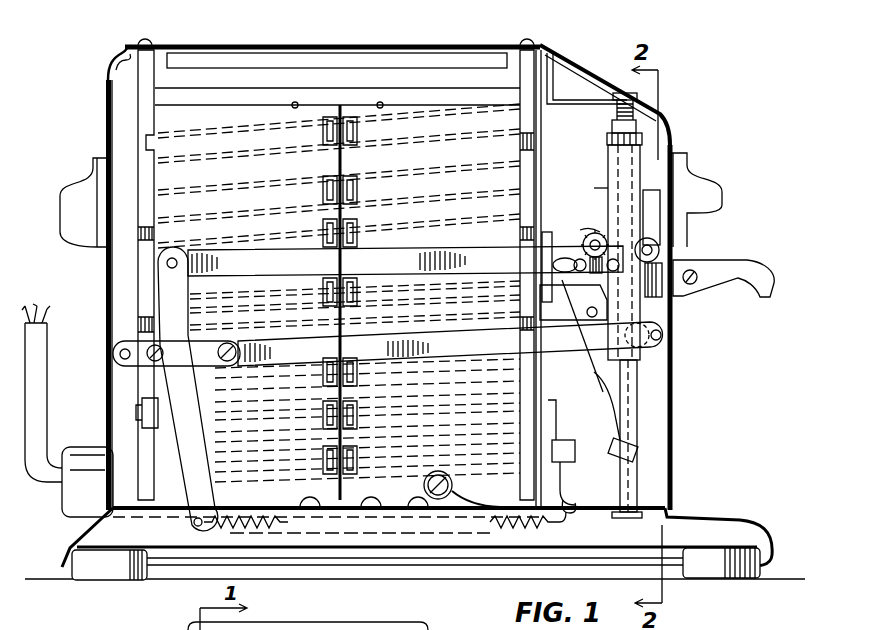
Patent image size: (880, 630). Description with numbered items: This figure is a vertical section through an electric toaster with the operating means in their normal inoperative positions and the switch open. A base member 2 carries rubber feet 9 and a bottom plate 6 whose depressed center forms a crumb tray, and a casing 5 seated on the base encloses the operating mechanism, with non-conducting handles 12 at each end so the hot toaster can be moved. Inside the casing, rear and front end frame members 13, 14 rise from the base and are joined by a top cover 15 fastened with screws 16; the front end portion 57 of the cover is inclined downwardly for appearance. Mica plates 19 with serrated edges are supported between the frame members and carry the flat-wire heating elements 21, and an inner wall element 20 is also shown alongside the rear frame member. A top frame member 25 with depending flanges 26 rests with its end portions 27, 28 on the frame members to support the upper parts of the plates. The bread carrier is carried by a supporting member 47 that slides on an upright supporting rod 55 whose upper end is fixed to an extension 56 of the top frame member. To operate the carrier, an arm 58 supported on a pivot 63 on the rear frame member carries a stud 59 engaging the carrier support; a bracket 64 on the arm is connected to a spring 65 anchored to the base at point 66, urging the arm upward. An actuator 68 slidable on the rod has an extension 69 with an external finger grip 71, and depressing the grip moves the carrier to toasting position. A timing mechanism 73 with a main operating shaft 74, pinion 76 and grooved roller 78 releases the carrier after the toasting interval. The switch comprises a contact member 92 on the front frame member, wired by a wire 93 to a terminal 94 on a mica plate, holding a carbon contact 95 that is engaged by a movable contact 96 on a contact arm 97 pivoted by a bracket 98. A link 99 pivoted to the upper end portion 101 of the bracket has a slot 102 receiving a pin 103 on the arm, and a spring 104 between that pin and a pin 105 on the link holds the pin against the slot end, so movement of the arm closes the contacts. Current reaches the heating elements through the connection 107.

The base member 2 is at (752, 546).
The casing 5 is at (108, 284).
The bottom plate or cover 6 is at (585, 548).
The feet 9 is at (120, 576).
The handles 12 is at (80, 196).
The end frame member 13 is at (138, 146).
The end frame member 14 is at (546, 232).
The top cover 15 is at (306, 44).
The screws 16 is at (148, 44).
The mica plates 19 is at (205, 97).
The inner wall 20 is at (148, 178).
The heating elements 21 is at (390, 184).
The member 25 is at (489, 46).
The depending flanges 26 is at (380, 72).
The end portion 27 is at (124, 68).
The end portion 28 is at (556, 50).
The supporting member 47 is at (636, 194).
The upright supporting rod 55 is at (634, 480).
The extension 56 is at (603, 103).
The front end portion 57 is at (614, 82).
The arm 58 is at (490, 341).
The stud 59 is at (668, 339).
The pivot 63 is at (126, 353).
The bracket 64 is at (172, 396).
The spring 65 is at (238, 528).
The spring attachment point 66 is at (577, 508).
The actuator 68 is at (612, 128).
The extension 69 is at (662, 282).
The finger grip 71 is at (740, 262).
The motor or timing mechanism 73 is at (605, 180).
The main operating shaft 74 is at (596, 233).
The pinion 76 is at (584, 236).
The grooved roller 78 is at (664, 254).
The contact member 92 is at (568, 464).
The wire 93 is at (490, 509).
The terminal 94 is at (452, 490).
The carbon contact 95 is at (572, 440).
The movable contact 96 is at (611, 448).
The contact arm 97 is at (620, 399).
The bracket 98 is at (568, 322).
The link 99 is at (406, 258).
The upper end portion 101 is at (189, 293).
The slot 102 is at (566, 258).
The stud or pin 103 is at (583, 272).
The spring 104 is at (604, 272).
The pin 105 is at (612, 257).
The connection 107 is at (32, 413).